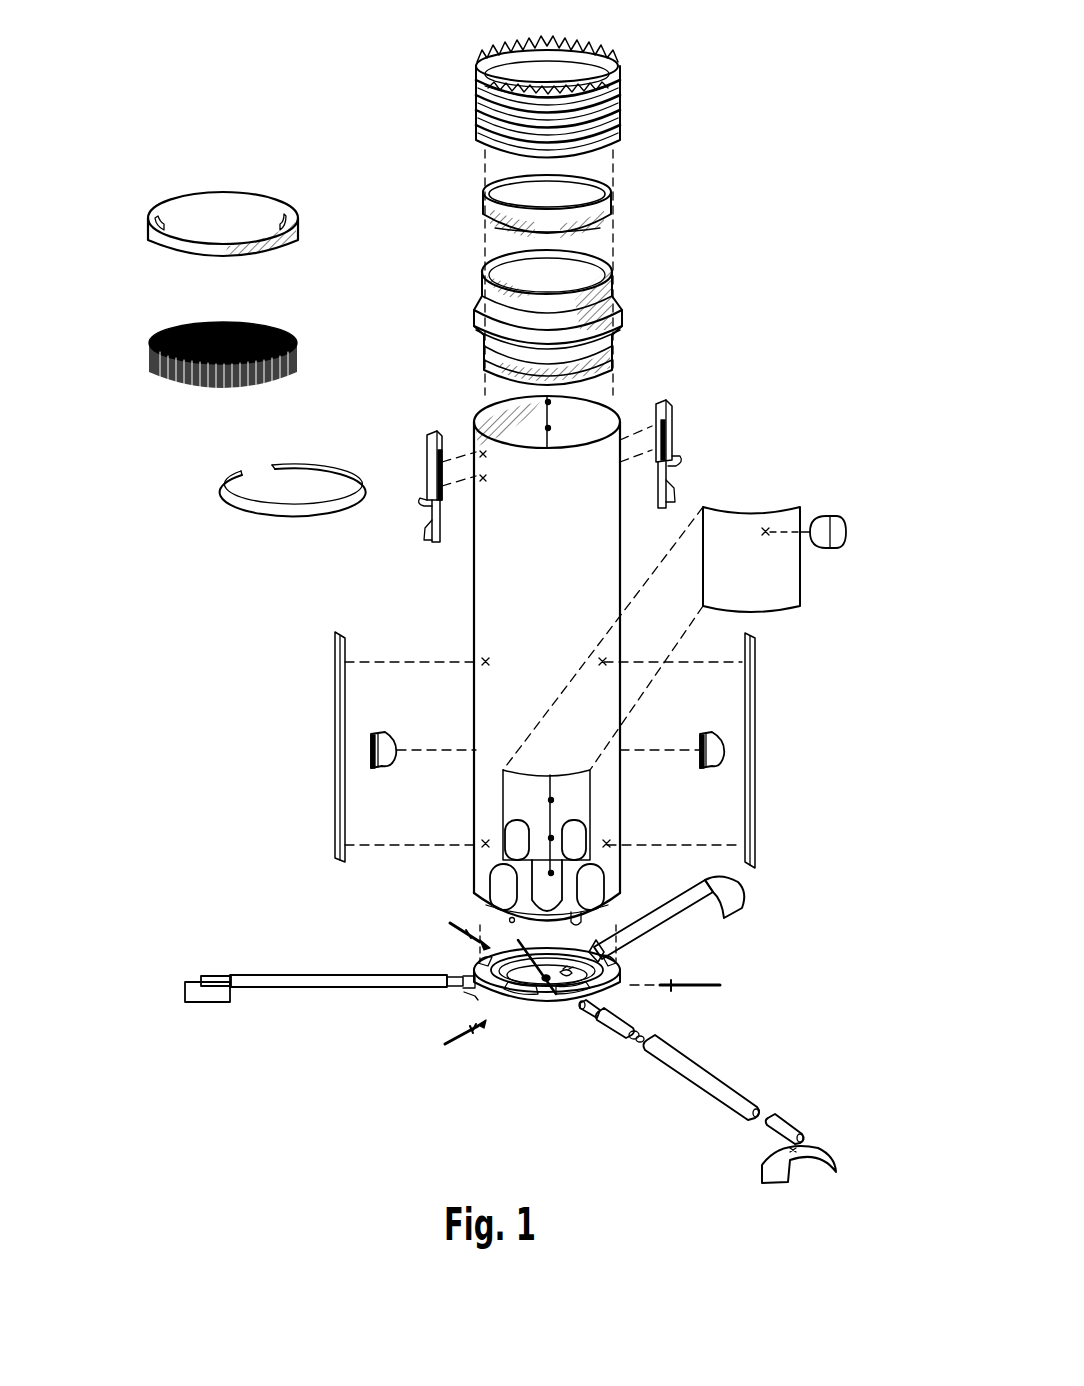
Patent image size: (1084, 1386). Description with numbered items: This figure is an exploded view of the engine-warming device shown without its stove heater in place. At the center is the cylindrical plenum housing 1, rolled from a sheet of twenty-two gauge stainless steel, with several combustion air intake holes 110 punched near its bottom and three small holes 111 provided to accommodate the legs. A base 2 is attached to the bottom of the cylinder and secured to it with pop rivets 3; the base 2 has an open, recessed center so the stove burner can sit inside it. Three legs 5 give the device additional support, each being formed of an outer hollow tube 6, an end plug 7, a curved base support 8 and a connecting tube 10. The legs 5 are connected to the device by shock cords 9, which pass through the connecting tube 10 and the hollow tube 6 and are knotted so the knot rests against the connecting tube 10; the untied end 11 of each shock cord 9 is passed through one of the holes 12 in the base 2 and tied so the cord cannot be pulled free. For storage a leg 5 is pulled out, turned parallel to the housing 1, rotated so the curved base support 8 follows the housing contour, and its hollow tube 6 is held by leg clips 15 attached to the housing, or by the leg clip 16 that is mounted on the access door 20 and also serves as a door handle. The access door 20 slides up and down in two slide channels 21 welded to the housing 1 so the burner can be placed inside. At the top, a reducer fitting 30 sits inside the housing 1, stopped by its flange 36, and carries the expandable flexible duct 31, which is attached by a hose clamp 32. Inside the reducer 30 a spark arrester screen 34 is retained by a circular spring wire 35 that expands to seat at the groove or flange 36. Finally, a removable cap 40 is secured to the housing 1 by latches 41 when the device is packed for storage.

The cylindrical plenum housing 1 is at (468, 592).
The base 2 is at (625, 1000).
The pop rivets 3 is at (445, 922).
The legs 5 is at (290, 965).
The outer hollow tube 6 is at (333, 965).
The end plug 7 is at (215, 965).
The curved base support 8 is at (182, 965).
The shock cords 9 is at (468, 995).
The connecting tube 10 is at (455, 978).
The untied end 11 is at (520, 945).
The holes 12 is at (582, 1014).
The leg clips 15 is at (385, 728).
The leg clip 16 is at (855, 532).
The access door 20 is at (805, 590).
The slide channels 21 is at (325, 687).
The reducer fitting 30 is at (470, 348).
The flexible duct 31 is at (465, 103).
The hose clamp 32 is at (470, 205).
The spark arrester screen 34 is at (148, 359).
The circular spring wire 35 is at (148, 448).
The groove / flange 36 is at (466, 324).
The removable cap 40 is at (148, 227).
The latches 41 is at (426, 441).
The combustion air intake holes 110 is at (517, 830).
The small holes 111 is at (730, 870).